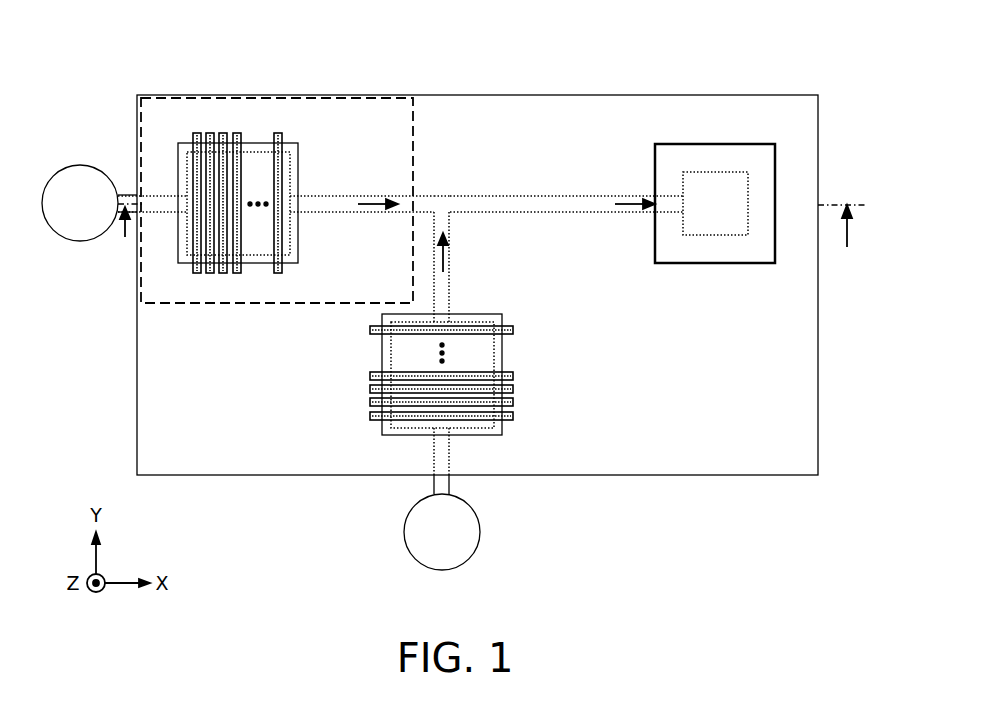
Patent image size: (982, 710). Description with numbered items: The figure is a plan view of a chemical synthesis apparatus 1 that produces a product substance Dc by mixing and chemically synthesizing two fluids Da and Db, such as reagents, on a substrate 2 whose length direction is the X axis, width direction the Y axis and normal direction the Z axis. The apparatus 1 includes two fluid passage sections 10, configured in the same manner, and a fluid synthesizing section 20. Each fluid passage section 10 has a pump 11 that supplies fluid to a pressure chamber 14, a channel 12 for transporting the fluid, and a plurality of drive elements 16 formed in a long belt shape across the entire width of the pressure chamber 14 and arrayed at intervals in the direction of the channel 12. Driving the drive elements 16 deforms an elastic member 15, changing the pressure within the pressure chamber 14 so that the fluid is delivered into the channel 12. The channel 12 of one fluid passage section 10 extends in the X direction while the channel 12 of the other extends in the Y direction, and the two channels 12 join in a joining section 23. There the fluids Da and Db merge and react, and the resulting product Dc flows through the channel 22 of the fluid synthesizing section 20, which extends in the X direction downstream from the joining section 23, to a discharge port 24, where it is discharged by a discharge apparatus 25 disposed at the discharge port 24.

The chemical synthesis apparatus 1 is at (816, 44).
The substrate 2 is at (818, 118).
The fluid passage section 10 is at (352, 114).
The pump 11 is at (80, 165).
The channel 12 is at (340, 213).
The pressure chamber 14 is at (290, 172).
The elastic member 15 is at (298, 147).
The drive element 16 is at (193, 133).
The fluid synthesizing section 20 is at (652, 112).
The channel 22 is at (575, 213).
The joining section 23 is at (440, 200).
The discharge port 24 is at (720, 172).
The discharge apparatus 25 is at (752, 144).